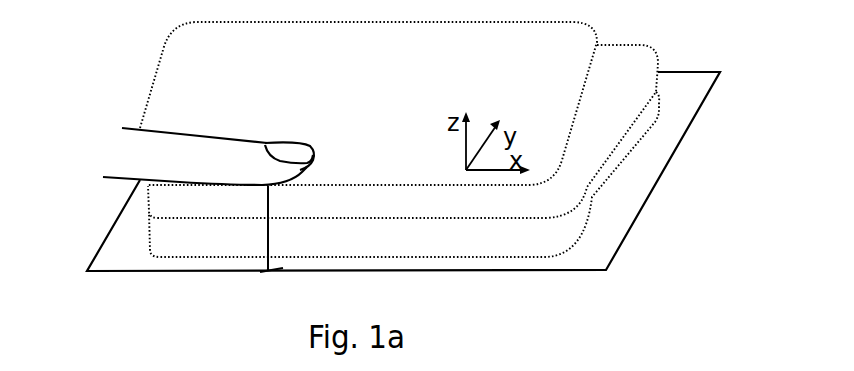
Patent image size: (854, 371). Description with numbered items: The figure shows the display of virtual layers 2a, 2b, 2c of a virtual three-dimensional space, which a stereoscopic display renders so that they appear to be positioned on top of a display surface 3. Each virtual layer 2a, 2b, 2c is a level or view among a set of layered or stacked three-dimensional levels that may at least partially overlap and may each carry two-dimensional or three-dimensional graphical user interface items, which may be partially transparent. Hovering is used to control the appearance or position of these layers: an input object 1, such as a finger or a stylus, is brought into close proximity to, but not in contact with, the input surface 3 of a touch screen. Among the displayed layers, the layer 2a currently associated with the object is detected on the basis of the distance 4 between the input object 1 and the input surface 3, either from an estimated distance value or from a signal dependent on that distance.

The input object 1 is at (207, 152).
The virtual layer 2a is at (597, 37).
The virtual layer 2b is at (658, 62).
The virtual layer 2c is at (658, 112).
The display surface 3 is at (138, 255).
The distance 4 is at (268, 247).